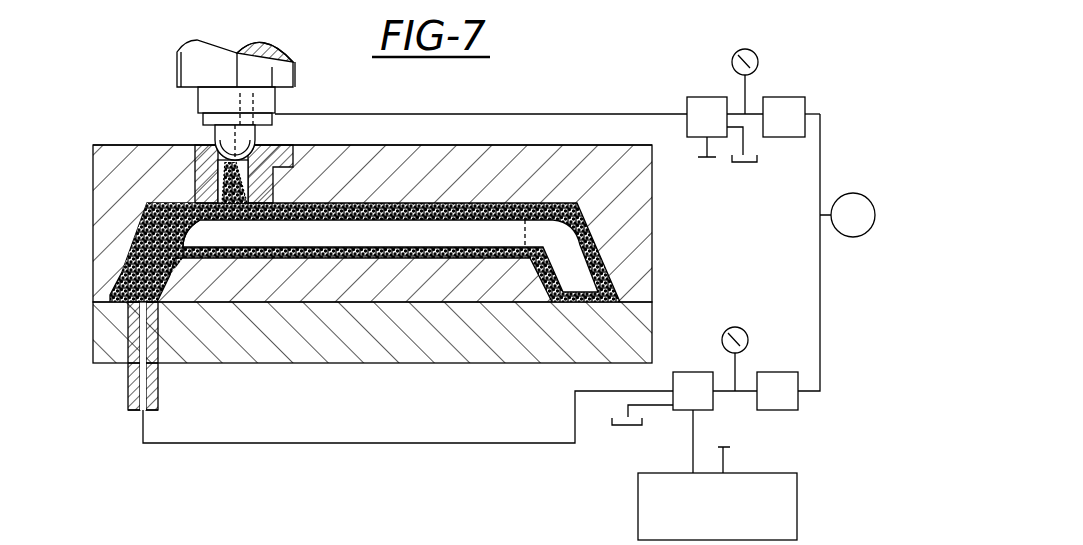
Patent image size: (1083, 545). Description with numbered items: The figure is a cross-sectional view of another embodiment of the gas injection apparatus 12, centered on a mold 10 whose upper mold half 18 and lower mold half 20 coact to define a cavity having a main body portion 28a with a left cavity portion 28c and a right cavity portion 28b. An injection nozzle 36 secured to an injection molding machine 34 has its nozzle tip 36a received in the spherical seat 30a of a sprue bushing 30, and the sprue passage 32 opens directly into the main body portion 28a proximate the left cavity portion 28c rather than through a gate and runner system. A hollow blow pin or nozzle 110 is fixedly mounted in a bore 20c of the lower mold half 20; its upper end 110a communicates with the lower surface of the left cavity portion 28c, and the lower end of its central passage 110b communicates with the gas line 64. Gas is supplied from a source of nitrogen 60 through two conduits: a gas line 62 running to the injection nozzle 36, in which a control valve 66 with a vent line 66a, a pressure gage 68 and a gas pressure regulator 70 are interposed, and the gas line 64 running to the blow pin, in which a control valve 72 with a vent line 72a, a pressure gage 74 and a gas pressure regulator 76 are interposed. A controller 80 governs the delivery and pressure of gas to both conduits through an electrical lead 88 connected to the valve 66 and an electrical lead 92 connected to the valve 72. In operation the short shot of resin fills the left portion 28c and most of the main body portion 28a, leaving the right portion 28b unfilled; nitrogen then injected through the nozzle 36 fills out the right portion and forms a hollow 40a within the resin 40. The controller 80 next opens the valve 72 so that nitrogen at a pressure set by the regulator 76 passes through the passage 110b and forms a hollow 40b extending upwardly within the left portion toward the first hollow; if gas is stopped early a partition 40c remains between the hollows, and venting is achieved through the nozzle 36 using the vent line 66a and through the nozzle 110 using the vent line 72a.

The mold 10 is at (690, 262).
The gas injection nozzle 12 is at (207, 84).
The upper mold half 18 is at (655, 262).
The lower mold half 20 is at (540, 355).
The bore 20c is at (156, 362).
The main body portion 28a is at (365, 211).
The right cavity portion 28b is at (590, 258).
The left cavity portion 28c is at (147, 233).
The sprue bushing 30 is at (280, 146).
The spherical seat 30a is at (183, 167).
The sprue passage 32 is at (250, 180).
The injection molding machine 34 is at (278, 78).
The injection nozzle 36 is at (200, 103).
The nozzle tip 36a is at (213, 136).
The resin 40 is at (538, 205).
The hollow 40a is at (475, 212).
The hollow 40b is at (137, 283).
The partition 40c is at (190, 232).
The source of nitrogen 60 is at (855, 192).
The gas line 62 is at (551, 113).
The gas line 64 is at (540, 445).
The control valve 66 is at (702, 97).
The vent line 66a is at (740, 142).
The pressure gage 68 is at (745, 49).
The gas pressure regulator 70 is at (793, 97).
The control valve 72 is at (693, 372).
The vent line 72a is at (660, 420).
The pressure gage 74 is at (735, 327).
The gas pressure regulator 76 is at (768, 372).
The controller 80 is at (717, 506).
The electrical lead 88 is at (700, 150).
The electrical lead 92 is at (697, 442).
The hollow blow pin 110 is at (150, 415).
The upper end 110a is at (125, 292).
The central passage 110b is at (130, 388).